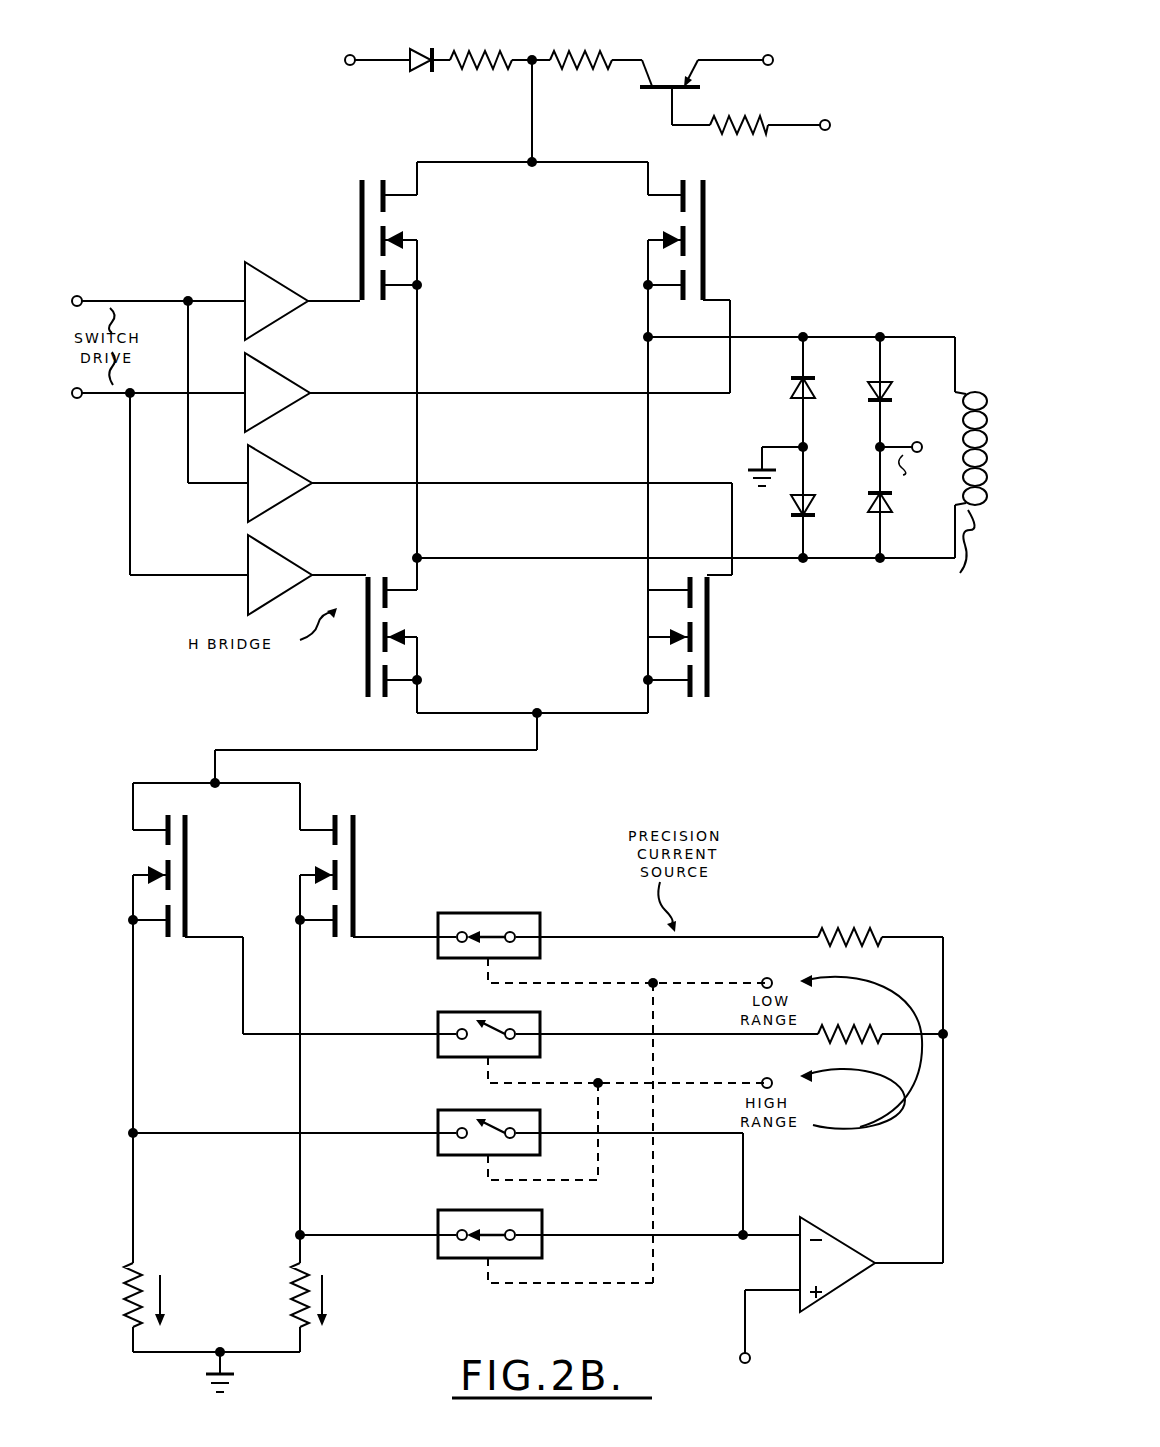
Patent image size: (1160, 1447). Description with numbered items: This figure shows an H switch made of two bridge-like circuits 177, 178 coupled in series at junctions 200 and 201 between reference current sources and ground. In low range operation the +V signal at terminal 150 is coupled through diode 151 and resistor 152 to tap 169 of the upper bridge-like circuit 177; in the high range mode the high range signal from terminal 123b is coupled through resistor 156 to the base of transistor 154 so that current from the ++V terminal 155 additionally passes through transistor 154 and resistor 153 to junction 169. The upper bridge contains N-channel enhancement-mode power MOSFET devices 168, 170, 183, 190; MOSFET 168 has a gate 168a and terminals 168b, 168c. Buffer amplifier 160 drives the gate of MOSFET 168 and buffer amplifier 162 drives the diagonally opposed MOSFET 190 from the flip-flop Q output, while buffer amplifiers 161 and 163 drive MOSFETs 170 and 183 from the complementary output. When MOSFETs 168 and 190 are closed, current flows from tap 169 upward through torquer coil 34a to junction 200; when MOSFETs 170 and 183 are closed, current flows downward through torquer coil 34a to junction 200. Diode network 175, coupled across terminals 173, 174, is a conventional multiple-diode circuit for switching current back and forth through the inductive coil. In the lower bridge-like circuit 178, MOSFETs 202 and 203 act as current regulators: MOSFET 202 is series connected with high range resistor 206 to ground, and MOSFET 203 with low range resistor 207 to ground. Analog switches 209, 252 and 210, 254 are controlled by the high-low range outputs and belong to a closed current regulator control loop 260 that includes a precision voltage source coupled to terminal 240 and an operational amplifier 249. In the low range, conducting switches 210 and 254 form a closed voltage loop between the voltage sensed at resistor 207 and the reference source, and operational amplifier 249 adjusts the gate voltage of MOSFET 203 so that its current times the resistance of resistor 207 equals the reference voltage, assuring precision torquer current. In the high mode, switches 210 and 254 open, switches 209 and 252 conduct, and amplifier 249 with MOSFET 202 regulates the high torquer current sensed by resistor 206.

The +V terminal 150 is at (350, 55).
The diode 151 is at (420, 74).
The resistor 152 is at (482, 51).
The resistor 153 is at (581, 51).
The transistor 154 is at (670, 72).
The ++V terminal 155 is at (770, 54).
The resistor 156 is at (740, 134).
The high range signal terminal 123b is at (825, 119).
The tap 169 is at (536, 160).
The buffer amplifier 160 is at (285, 278).
The buffer amplifier 161 is at (285, 378).
The buffer amplifier 162 is at (285, 470).
The buffer amplifier 163 is at (285, 560).
The MOSFET device 168 is at (405, 228).
The gate of MOSFET 168 168a is at (320, 305).
The drain terminal of MOSFET 168 168b is at (420, 186).
The source terminal of MOSFET 168 168c is at (422, 286).
The MOSFET device 170 is at (655, 222).
The terminal 173 is at (645, 286).
The terminal 174 is at (423, 556).
The diode network 175 is at (838, 322).
The torquer coil 34a is at (962, 445).
The bridge-like circuit 177 is at (728, 625).
The MOSFET device 183 is at (423, 640).
The MOSFET device 190 is at (648, 650).
The junction 200 is at (536, 710).
The bridge-like circuit 178 is at (140, 770).
The junction 201 is at (218, 786).
The MOSFET 202 is at (190, 860).
The MOSFET 203 is at (357, 866).
The switch 210 is at (543, 917).
The switch 252 is at (543, 1022).
The switch 209 is at (535, 1112).
The switch 254 is at (543, 1222).
The closed current regulator control loop 260 is at (861, 1052).
The operational amplifier 249 is at (842, 1283).
The precision voltage source terminal 240 is at (740, 1354).
The high range resistor 206 is at (150, 1272).
The low range resistor 207 is at (313, 1272).